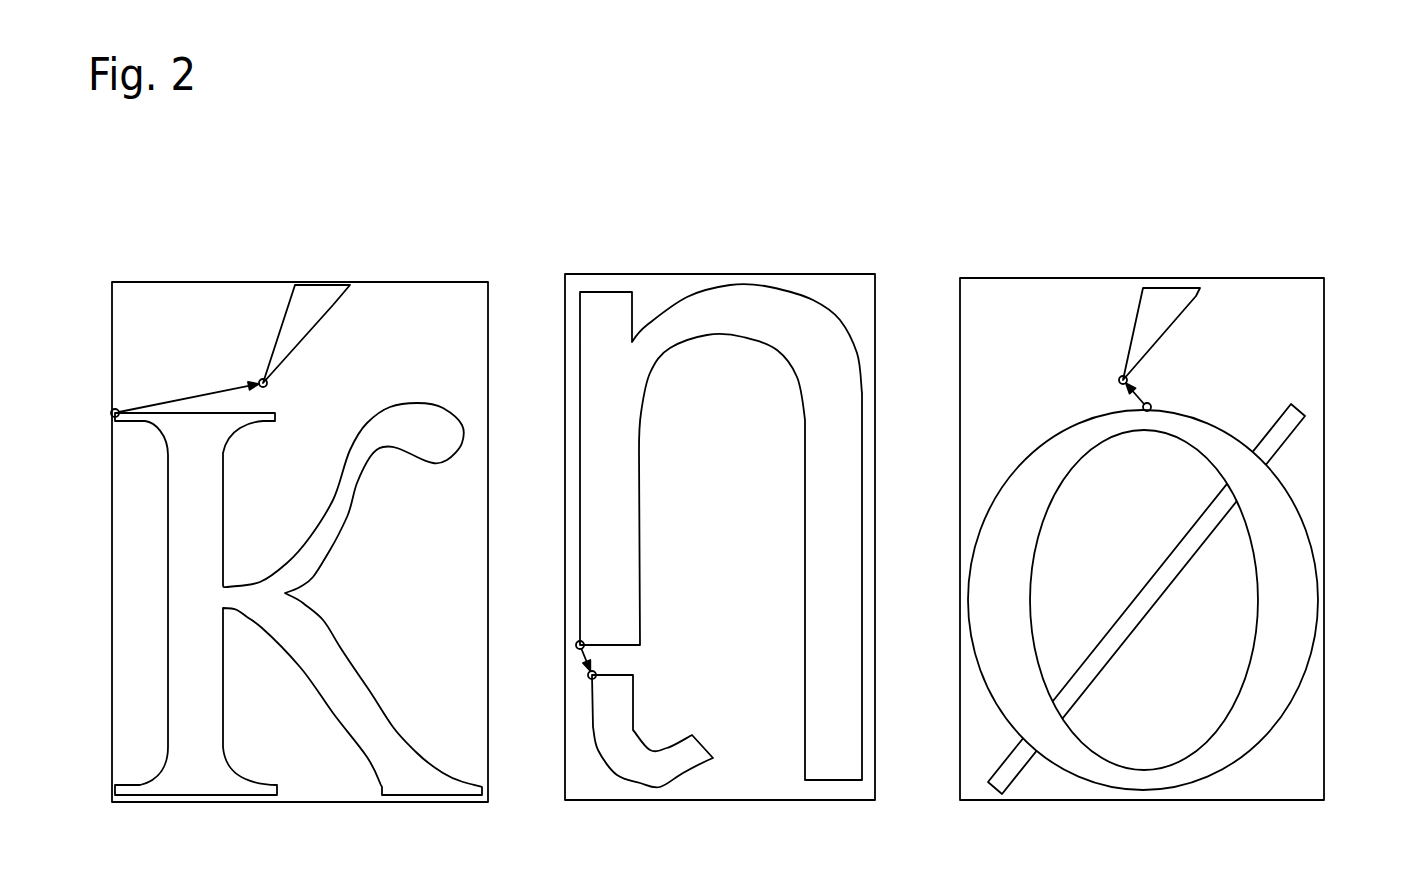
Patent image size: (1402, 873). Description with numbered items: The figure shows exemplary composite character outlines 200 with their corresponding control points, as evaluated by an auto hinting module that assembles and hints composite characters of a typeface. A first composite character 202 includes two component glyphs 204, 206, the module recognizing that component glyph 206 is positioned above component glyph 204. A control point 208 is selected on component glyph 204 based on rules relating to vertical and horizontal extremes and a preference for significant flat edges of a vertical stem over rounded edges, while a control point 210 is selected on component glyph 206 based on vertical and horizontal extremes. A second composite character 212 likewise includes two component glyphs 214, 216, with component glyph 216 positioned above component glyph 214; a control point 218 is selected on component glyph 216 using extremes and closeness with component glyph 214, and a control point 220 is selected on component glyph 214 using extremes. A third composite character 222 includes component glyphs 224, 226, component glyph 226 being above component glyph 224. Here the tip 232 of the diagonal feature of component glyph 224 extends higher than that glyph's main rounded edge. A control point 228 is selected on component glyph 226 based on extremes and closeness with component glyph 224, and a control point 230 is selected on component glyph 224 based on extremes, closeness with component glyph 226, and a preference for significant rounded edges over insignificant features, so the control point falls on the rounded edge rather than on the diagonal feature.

The composite character outlines 200 is at (1245, 155).
The composite character 202 is at (195, 280).
The component glyph 204 is at (317, 572).
The component glyph 206 is at (333, 310).
The control point 208 is at (118, 412).
The control point 210 is at (268, 386).
The composite character 212 is at (683, 273).
The component glyph 214 is at (685, 775).
The component glyph 216 is at (837, 318).
The control point 218 is at (582, 645).
The control point 220 is at (594, 675).
The composite character 222 is at (1057, 277).
The component glyph 224 is at (1002, 477).
The component glyph 226 is at (1197, 297).
The control point 228 is at (1127, 380).
The control point 230 is at (1151, 407).
The tip 232 is at (1298, 405).